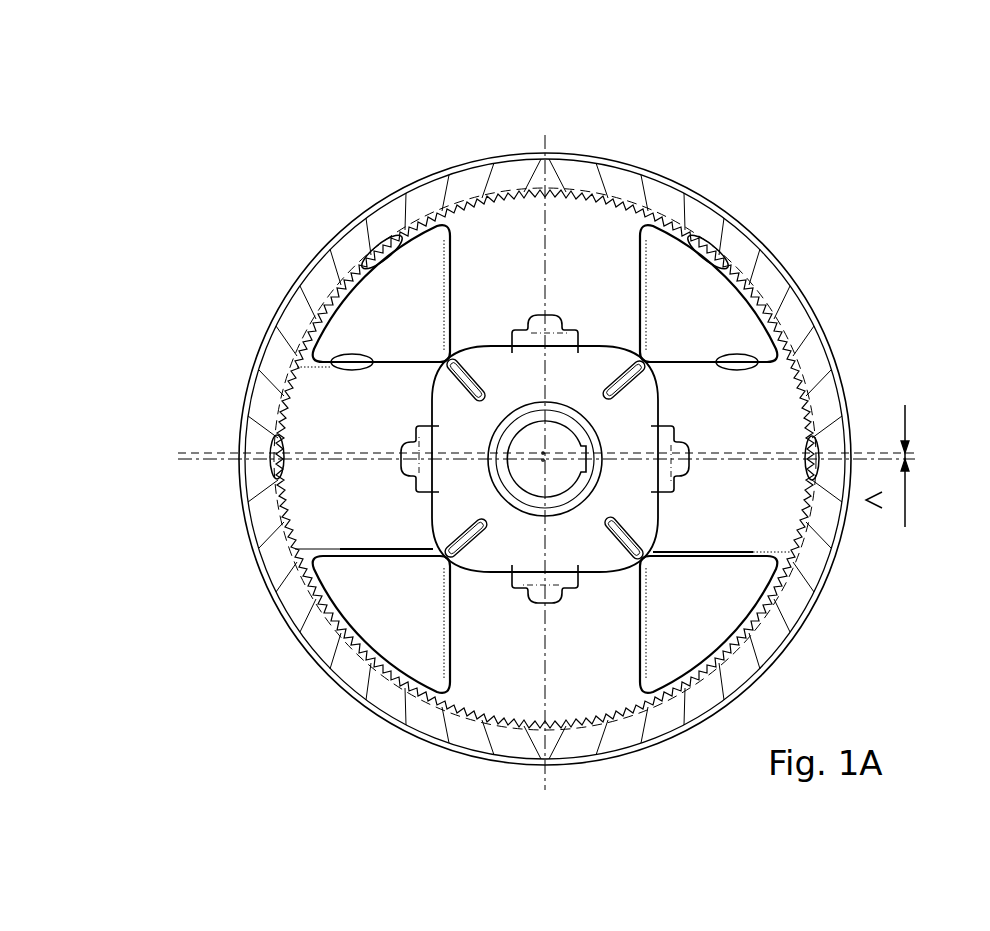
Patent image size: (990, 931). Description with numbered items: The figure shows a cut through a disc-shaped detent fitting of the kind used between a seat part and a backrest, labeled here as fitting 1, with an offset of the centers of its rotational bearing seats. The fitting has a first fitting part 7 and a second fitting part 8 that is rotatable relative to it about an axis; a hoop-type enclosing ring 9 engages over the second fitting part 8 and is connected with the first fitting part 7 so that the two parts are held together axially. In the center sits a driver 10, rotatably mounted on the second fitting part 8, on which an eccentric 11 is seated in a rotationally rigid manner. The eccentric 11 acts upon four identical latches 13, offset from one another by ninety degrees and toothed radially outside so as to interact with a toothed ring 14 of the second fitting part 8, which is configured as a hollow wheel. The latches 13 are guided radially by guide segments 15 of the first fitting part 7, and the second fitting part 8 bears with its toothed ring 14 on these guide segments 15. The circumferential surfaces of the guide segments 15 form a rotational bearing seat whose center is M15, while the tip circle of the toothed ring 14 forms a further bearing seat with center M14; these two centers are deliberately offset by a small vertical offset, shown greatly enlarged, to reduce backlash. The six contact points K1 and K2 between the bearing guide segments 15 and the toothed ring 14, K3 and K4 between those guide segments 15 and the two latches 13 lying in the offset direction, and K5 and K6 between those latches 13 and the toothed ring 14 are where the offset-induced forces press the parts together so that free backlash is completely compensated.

The torsional vibration damper assembly 1 is at (584, 462).
The first fitting part 7 is at (780, 563).
The second fitting part 8 is at (815, 567).
The enclosing ring 9 is at (843, 549).
The driver 10 is at (560, 498).
The eccentric 11 is at (505, 528).
The latches 13 is at (292, 496).
The toothed ring 14 is at (300, 573).
The guide segments 15 is at (377, 627).
The contact point K1 is at (387, 243).
The contact point K2 is at (700, 250).
The contact point K3 is at (342, 368).
The contact point K4 is at (753, 366).
The contact point K5 is at (270, 461).
The contact point K6 is at (807, 452).
The center of the rotational bearing seat of the toothed ring M14 is at (543, 460).
The center of the rotational bearing seat of the guide segments M15 is at (543, 453).